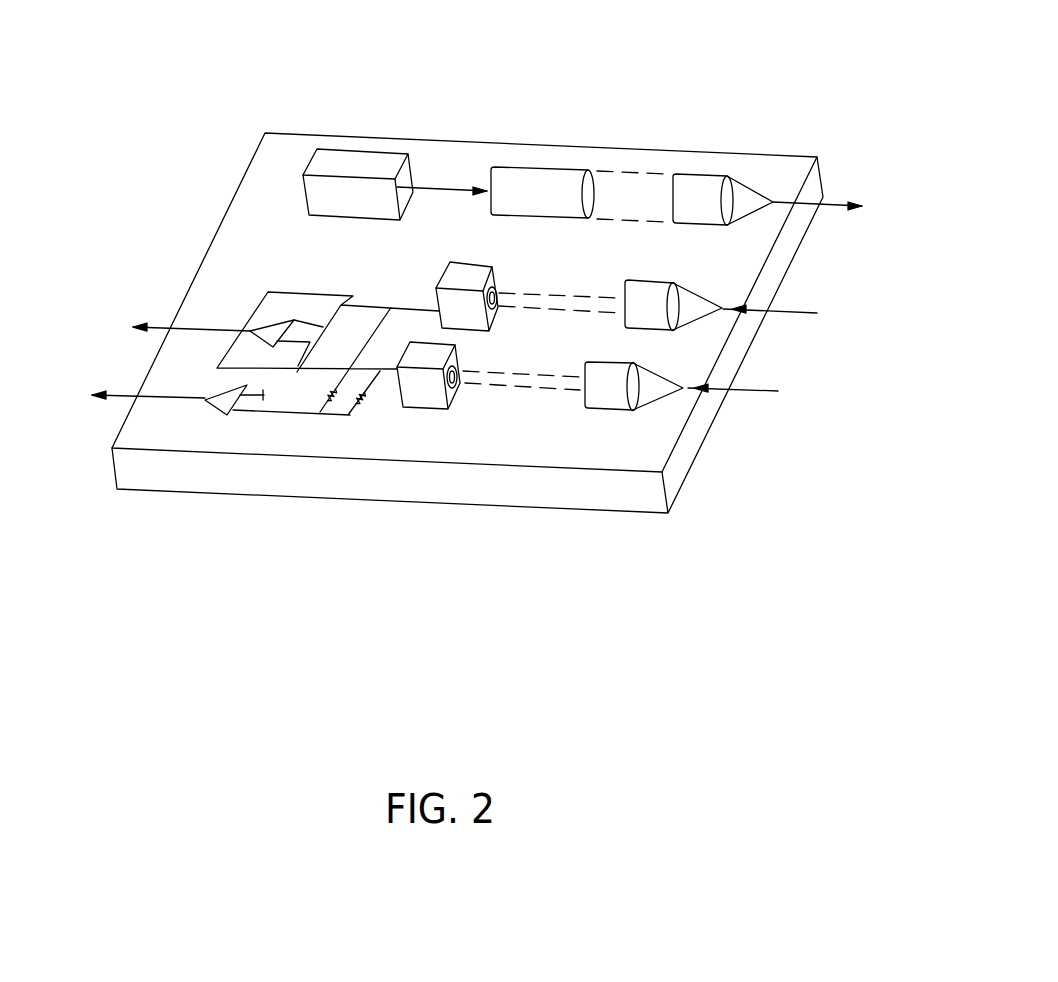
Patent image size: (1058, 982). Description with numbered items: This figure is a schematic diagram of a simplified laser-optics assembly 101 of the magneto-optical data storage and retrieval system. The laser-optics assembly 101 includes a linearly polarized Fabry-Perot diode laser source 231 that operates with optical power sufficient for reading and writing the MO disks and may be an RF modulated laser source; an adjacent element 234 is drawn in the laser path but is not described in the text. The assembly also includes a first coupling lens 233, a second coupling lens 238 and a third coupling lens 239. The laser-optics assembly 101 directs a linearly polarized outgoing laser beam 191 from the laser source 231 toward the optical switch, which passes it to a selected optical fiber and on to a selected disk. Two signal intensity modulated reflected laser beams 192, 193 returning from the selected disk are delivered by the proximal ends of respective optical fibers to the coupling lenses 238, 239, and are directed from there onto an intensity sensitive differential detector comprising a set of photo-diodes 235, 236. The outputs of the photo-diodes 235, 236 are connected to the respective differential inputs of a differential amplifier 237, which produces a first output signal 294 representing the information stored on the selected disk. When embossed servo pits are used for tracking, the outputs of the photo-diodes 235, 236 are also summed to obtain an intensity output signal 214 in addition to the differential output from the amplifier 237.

The laser-optics assembly 101 is at (185, 110).
The Fabry-Perot diode laser source 231 is at (377, 152).
The laser 234 is at (543, 167).
The first coupling lens 233 is at (707, 175).
The outgoing laser beam 191 is at (836, 193).
The reflected laser beam 192 is at (795, 311).
The reflected laser beam 193 is at (757, 392).
The second coupling lens 238 is at (700, 318).
The third coupling lens 239 is at (663, 402).
The photo-diode 235 is at (483, 331).
The photo-diode 236 is at (427, 410).
The differential amplifier 237 is at (267, 352).
The first output signal 294 is at (167, 326).
The intensity output signal 214 is at (119, 395).